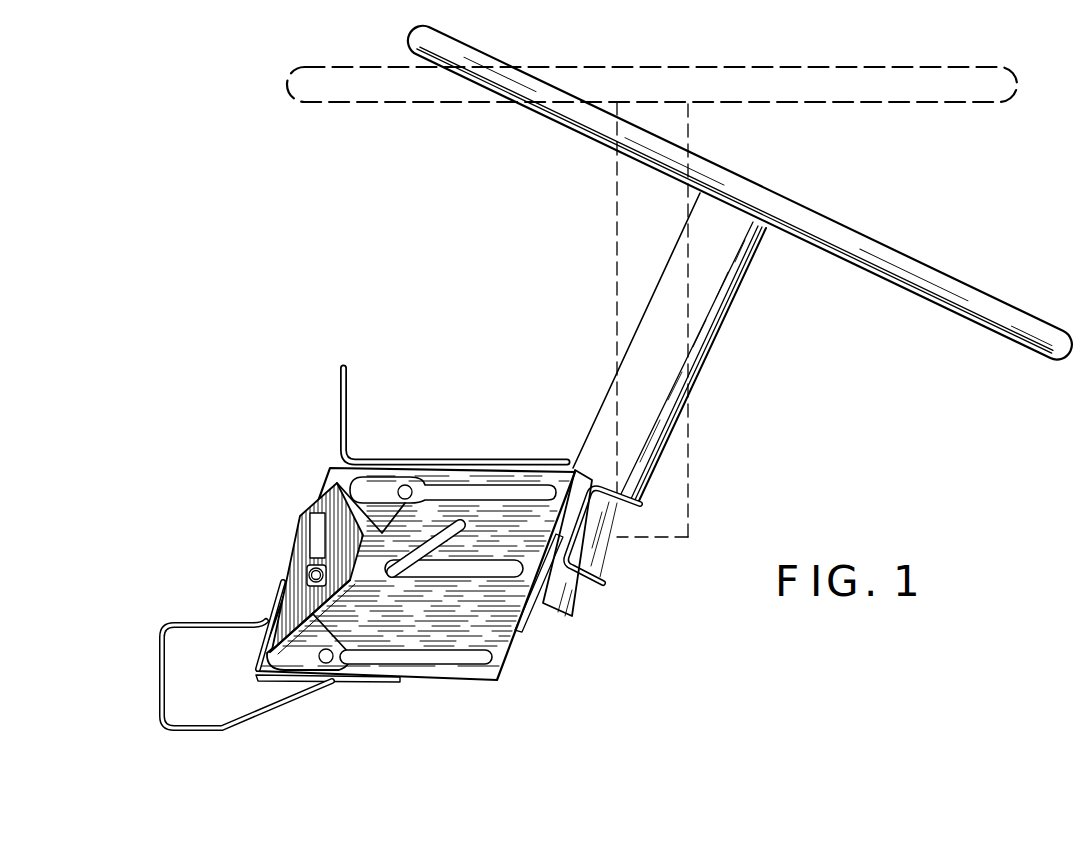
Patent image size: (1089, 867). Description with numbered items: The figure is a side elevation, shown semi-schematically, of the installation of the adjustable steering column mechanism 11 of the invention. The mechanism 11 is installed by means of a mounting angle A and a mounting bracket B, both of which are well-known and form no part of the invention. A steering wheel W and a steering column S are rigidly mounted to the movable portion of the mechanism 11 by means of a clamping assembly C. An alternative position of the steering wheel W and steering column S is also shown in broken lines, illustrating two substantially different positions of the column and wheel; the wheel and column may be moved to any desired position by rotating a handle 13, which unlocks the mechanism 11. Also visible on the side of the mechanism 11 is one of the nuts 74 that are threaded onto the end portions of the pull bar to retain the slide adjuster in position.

The steering wheel W is at (935, 78).
The steering column S is at (620, 215).
The mounting angle A is at (348, 408).
The mounting bracket B is at (197, 621).
The clamping assembly C is at (612, 572).
The adjustable steering column mechanism 11 is at (291, 483).
The handle 13 is at (457, 544).
The nuts 74 is at (307, 567).